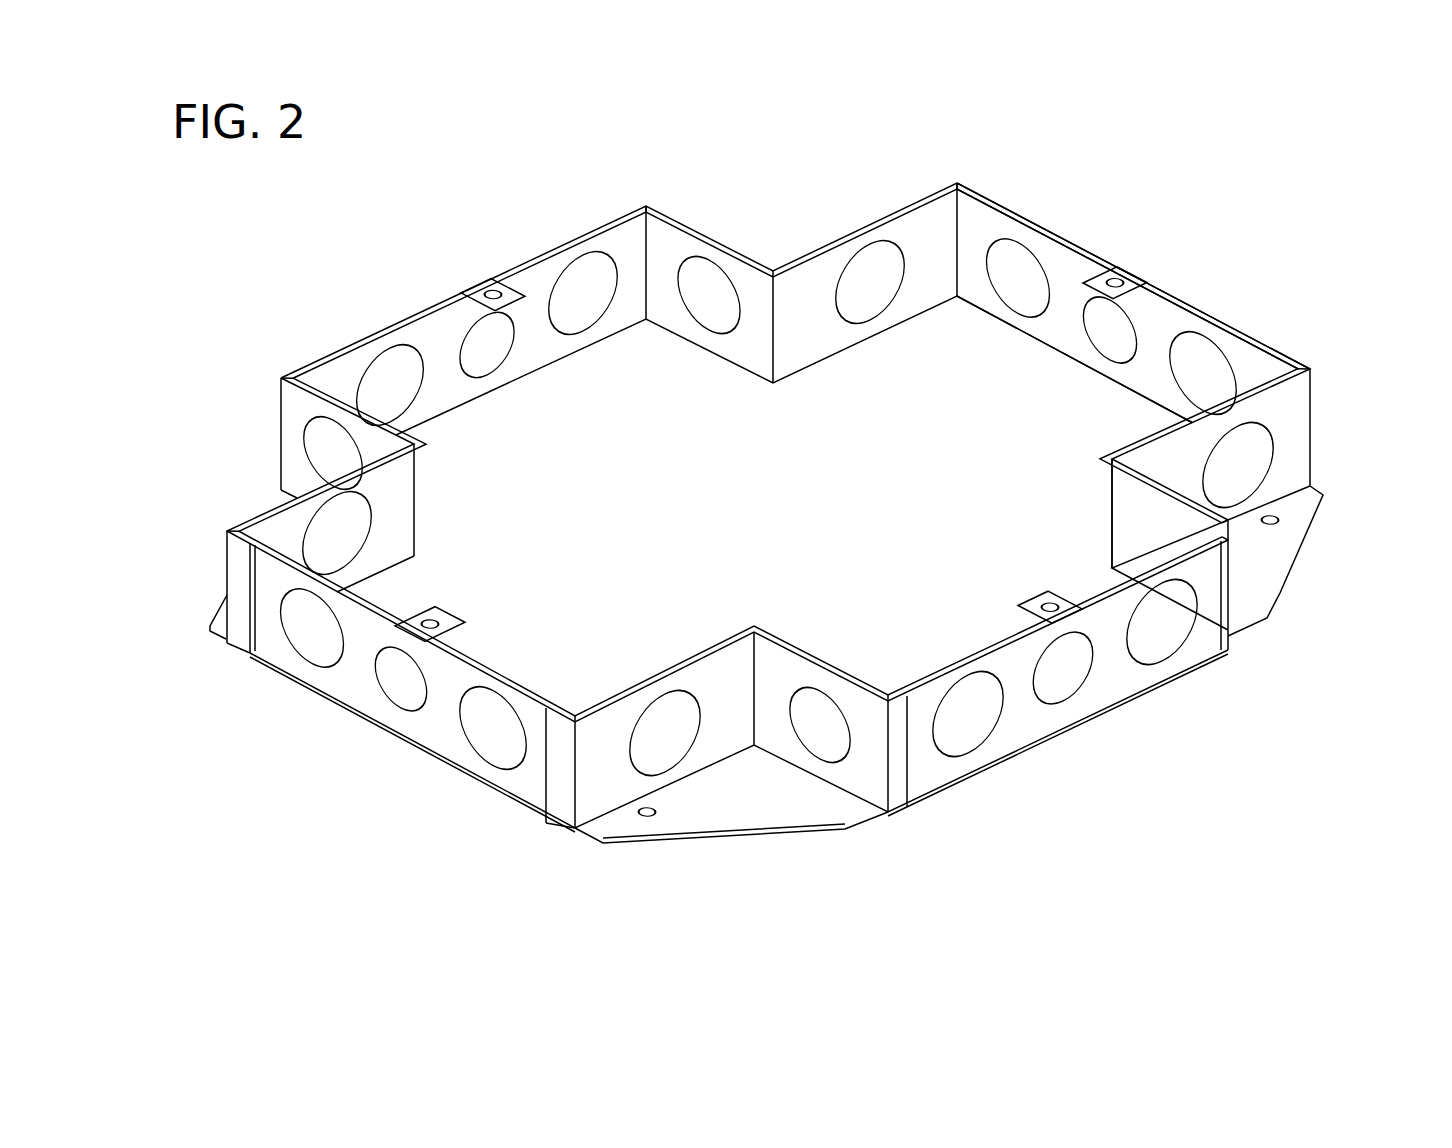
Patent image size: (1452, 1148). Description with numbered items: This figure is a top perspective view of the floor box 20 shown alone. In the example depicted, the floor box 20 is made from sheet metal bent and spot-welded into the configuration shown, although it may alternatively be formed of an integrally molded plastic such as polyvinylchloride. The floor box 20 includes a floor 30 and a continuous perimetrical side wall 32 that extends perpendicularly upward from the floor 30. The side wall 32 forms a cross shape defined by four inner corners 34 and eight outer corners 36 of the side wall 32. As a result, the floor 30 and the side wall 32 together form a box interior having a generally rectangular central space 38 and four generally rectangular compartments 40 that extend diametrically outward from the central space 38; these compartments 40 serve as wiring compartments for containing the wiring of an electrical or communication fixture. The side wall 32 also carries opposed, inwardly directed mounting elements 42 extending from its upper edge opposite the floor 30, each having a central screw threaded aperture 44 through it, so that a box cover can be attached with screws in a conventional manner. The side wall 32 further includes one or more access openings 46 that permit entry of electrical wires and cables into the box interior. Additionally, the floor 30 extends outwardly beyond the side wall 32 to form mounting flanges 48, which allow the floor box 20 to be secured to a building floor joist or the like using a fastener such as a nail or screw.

The floor box 20 is at (327, 267).
The floor 30 is at (1003, 373).
The side wall 32 is at (1085, 257).
The inner corners 34 is at (770, 293).
The outer corners 36 is at (650, 205).
The central space 38 is at (778, 497).
The compartments 40 is at (485, 633).
The mounting elements 42 is at (511, 295).
The central screw threaded aperture 44 is at (493, 293).
The access openings 46 is at (947, 703).
The mounting flanges 48 is at (740, 805).